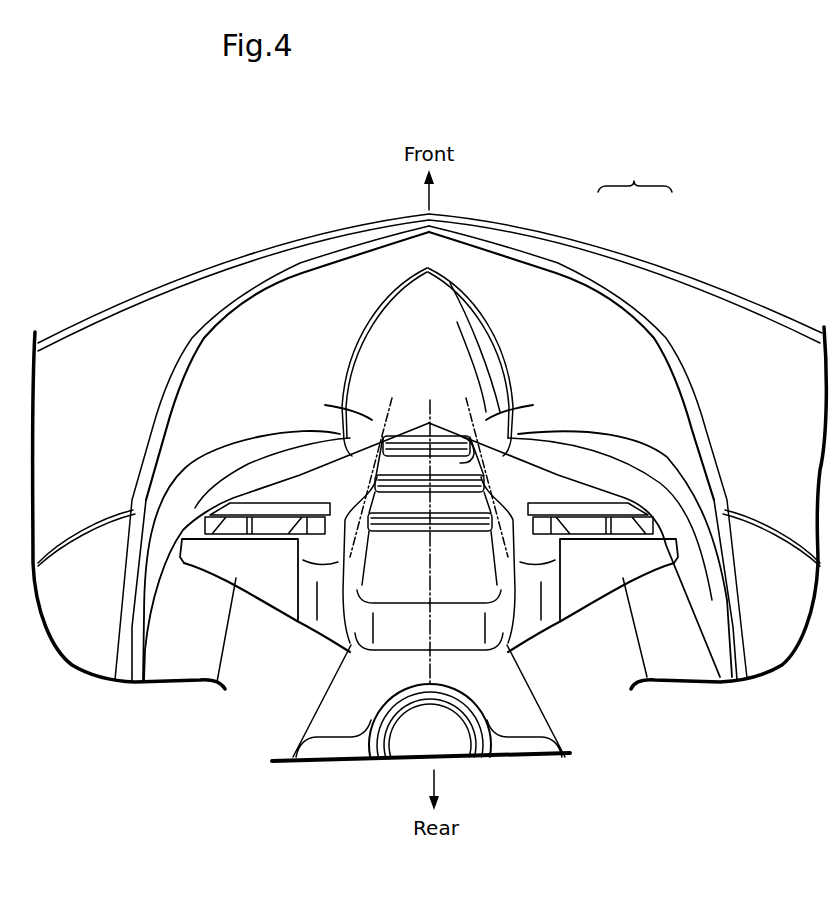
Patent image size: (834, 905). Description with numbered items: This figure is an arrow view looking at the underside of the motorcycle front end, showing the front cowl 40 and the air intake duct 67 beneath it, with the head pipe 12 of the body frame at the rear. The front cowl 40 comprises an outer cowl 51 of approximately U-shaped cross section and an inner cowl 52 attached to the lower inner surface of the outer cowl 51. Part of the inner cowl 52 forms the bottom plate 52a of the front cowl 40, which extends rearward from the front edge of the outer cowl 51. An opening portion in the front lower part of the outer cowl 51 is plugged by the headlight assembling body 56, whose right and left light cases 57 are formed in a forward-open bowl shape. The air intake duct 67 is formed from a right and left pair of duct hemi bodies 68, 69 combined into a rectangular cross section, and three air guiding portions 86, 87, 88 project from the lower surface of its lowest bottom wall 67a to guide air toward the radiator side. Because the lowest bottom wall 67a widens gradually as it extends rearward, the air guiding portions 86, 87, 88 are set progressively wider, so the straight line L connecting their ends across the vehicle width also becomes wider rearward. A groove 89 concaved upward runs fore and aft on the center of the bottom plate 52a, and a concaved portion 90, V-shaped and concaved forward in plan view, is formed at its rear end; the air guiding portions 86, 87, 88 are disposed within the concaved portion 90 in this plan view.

The head pipe 12 is at (520, 747).
The front cowl 40 is at (635, 171).
The outer cowl 51 is at (691, 303).
The inner cowl 52 is at (574, 276).
The bottom plate 52a is at (257, 323).
The headlight assembling body 56 is at (266, 572).
The light case 57 is at (278, 490).
The air intake duct 67 is at (518, 603).
The lowest bottom wall 67a is at (405, 463).
The duct hemi body 68 is at (512, 573).
The duct hemi body 69 is at (367, 623).
The air guiding portion 86 is at (447, 412).
The air guiding portion 87 is at (470, 500).
The air guiding portion 88 is at (448, 530).
The groove 89 is at (376, 373).
The concaved portion 90 is at (480, 453).
The straight line L is at (380, 420).